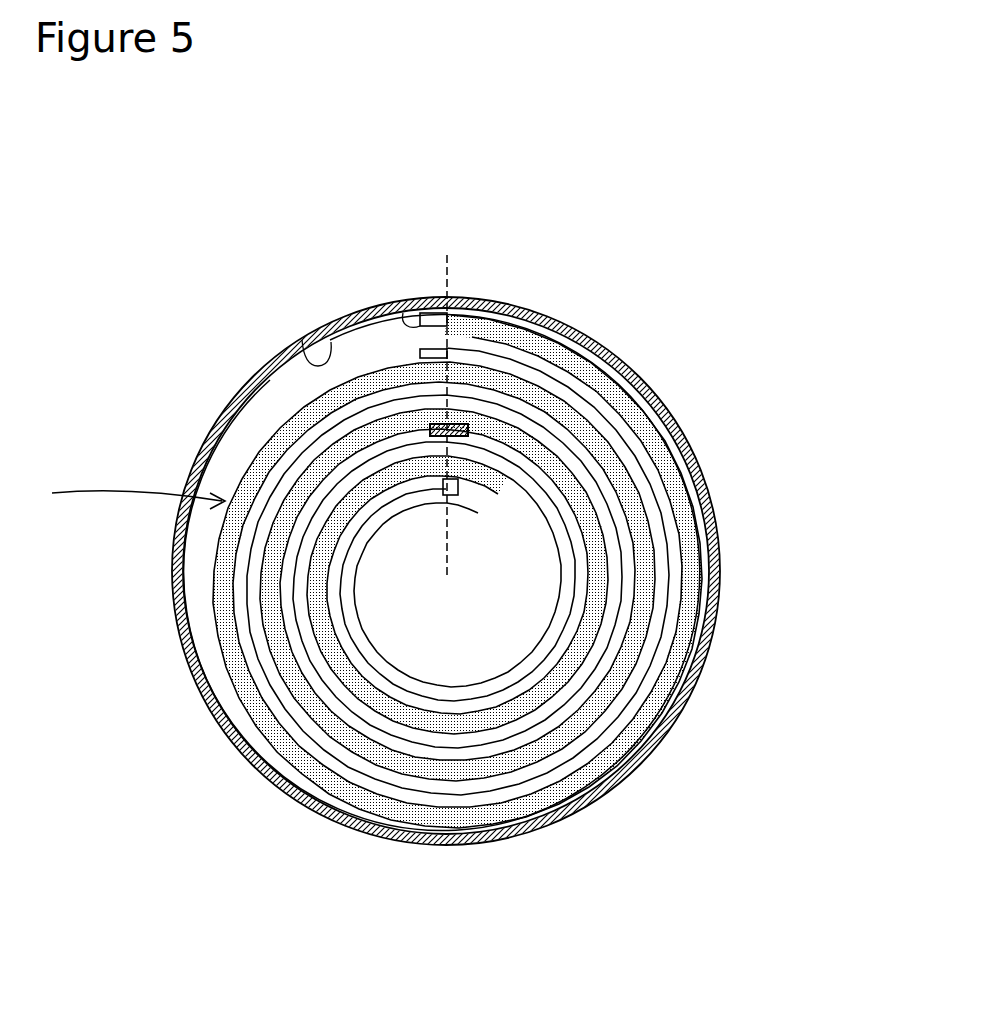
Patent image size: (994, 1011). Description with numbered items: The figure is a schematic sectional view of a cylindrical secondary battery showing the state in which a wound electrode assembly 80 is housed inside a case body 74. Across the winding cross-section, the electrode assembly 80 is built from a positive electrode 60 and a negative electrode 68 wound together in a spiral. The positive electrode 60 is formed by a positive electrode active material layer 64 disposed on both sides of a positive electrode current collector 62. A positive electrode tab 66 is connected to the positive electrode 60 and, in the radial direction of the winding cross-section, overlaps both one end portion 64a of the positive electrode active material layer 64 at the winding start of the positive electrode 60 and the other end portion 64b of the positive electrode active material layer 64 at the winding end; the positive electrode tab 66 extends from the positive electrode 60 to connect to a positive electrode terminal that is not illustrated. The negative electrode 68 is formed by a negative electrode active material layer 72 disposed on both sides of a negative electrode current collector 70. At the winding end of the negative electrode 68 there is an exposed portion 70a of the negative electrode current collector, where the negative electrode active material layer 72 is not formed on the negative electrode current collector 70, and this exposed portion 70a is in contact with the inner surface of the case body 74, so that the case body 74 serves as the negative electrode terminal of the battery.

The positive electrode 60 is at (544, 526).
The positive electrode current collector 62 is at (695, 455).
The positive electrode active material layer 64 is at (510, 526).
The one end portion of the positive electrode active material layer 64a is at (472, 462).
The other end portion of the positive electrode active material layer 64b is at (410, 312).
The positive electrode tab 66 is at (465, 437).
The negative electrode 68 is at (479, 540).
The negative electrode current collector 70 is at (521, 540).
The exposed portion of the negative electrode current collector 70a is at (300, 338).
The negative electrode active material layer 72 is at (652, 631).
The case body 74 is at (232, 403).
The electrode assembly 80 is at (119, 493).